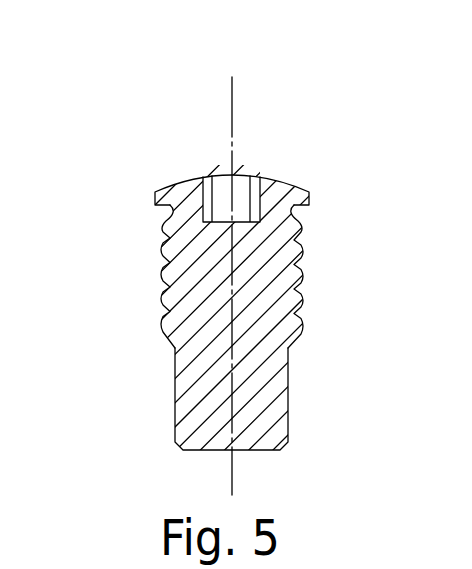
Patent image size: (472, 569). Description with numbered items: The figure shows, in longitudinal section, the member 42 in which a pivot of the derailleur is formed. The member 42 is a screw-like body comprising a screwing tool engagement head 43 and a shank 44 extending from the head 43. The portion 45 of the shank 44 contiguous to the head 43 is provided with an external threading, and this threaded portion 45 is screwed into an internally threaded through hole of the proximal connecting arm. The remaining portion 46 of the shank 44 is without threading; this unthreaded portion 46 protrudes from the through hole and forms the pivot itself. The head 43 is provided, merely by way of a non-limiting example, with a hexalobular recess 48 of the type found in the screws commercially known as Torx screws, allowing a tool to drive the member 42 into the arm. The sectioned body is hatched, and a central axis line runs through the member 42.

The member 42 is at (307, 123).
The screwing tool engagement head 43 is at (285, 188).
The shank 44 is at (305, 258).
The portion of the shank provided with external threading 45 is at (173, 262).
The portion of the shank without threading 46 is at (252, 400).
The hexalobular recess 48 is at (223, 186).